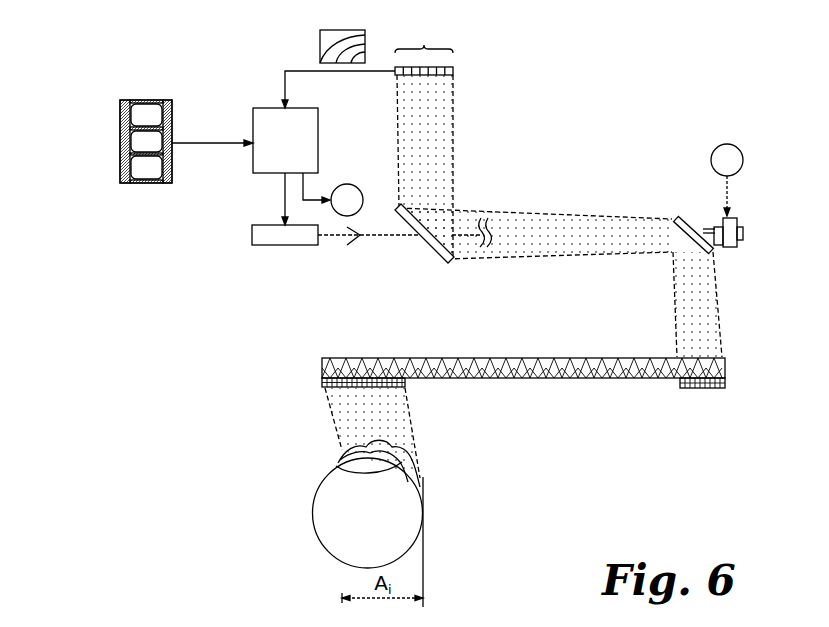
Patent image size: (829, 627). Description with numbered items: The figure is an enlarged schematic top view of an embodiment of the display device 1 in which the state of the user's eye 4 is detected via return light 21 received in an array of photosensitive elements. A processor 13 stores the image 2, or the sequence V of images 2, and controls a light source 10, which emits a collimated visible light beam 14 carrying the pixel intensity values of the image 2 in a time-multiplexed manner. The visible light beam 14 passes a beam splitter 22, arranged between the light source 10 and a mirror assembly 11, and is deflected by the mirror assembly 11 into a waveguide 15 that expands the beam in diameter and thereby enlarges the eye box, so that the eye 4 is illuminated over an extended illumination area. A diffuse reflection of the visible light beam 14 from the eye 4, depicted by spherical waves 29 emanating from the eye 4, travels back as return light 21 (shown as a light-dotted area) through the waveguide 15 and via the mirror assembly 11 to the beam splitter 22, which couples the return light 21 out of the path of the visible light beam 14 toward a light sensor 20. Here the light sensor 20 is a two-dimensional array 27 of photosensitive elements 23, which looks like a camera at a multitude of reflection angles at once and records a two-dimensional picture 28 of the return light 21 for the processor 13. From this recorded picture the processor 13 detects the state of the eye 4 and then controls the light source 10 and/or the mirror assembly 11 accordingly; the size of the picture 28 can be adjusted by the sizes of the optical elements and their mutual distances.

The display device 1 is at (155, 417).
The image 2 is at (137, 118).
The sequence of images V is at (120, 107).
The eye 4 is at (316, 533).
The light source 10 is at (262, 245).
The mirror assembly 11 is at (760, 222).
The processor 13 is at (320, 147).
The visible light beam 14 is at (372, 237).
The waveguide 15 is at (672, 417).
The light sensor 20 is at (482, 63).
The return light 21 is at (452, 168).
The beam splitter 22 is at (452, 265).
The photosensitive elements 23 is at (457, 75).
The two-dimensional array 27 is at (424, 35).
The two-dimensional picture 28 is at (320, 43).
The spherical waves 29 is at (412, 455).